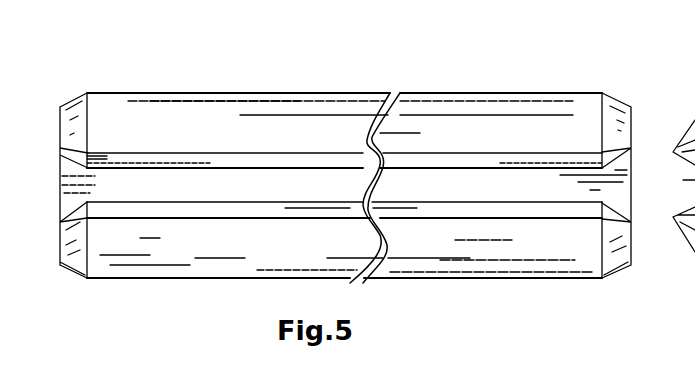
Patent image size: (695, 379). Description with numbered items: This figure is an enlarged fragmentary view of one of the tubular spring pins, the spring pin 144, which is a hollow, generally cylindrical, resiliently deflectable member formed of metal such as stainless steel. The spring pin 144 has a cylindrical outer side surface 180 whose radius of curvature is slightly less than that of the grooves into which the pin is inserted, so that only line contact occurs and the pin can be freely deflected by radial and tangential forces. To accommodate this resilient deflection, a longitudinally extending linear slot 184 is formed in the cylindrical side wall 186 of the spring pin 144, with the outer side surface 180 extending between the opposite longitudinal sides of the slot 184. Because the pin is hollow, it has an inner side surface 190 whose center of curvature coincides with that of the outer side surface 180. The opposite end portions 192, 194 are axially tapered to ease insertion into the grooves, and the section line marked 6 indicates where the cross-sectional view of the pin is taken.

The tubular spring pin 144 is at (344, 188).
The cylindrical outer side surface 180 is at (243, 106).
The longitudinally extending linear slot 184 is at (213, 183).
The cylindrical side wall 186 is at (159, 66).
The inner side surface 190 is at (90, 187).
The end portion 192 is at (62, 82).
The end portion 194 is at (643, 86).
The section line 6- 6 is at (640, 74).